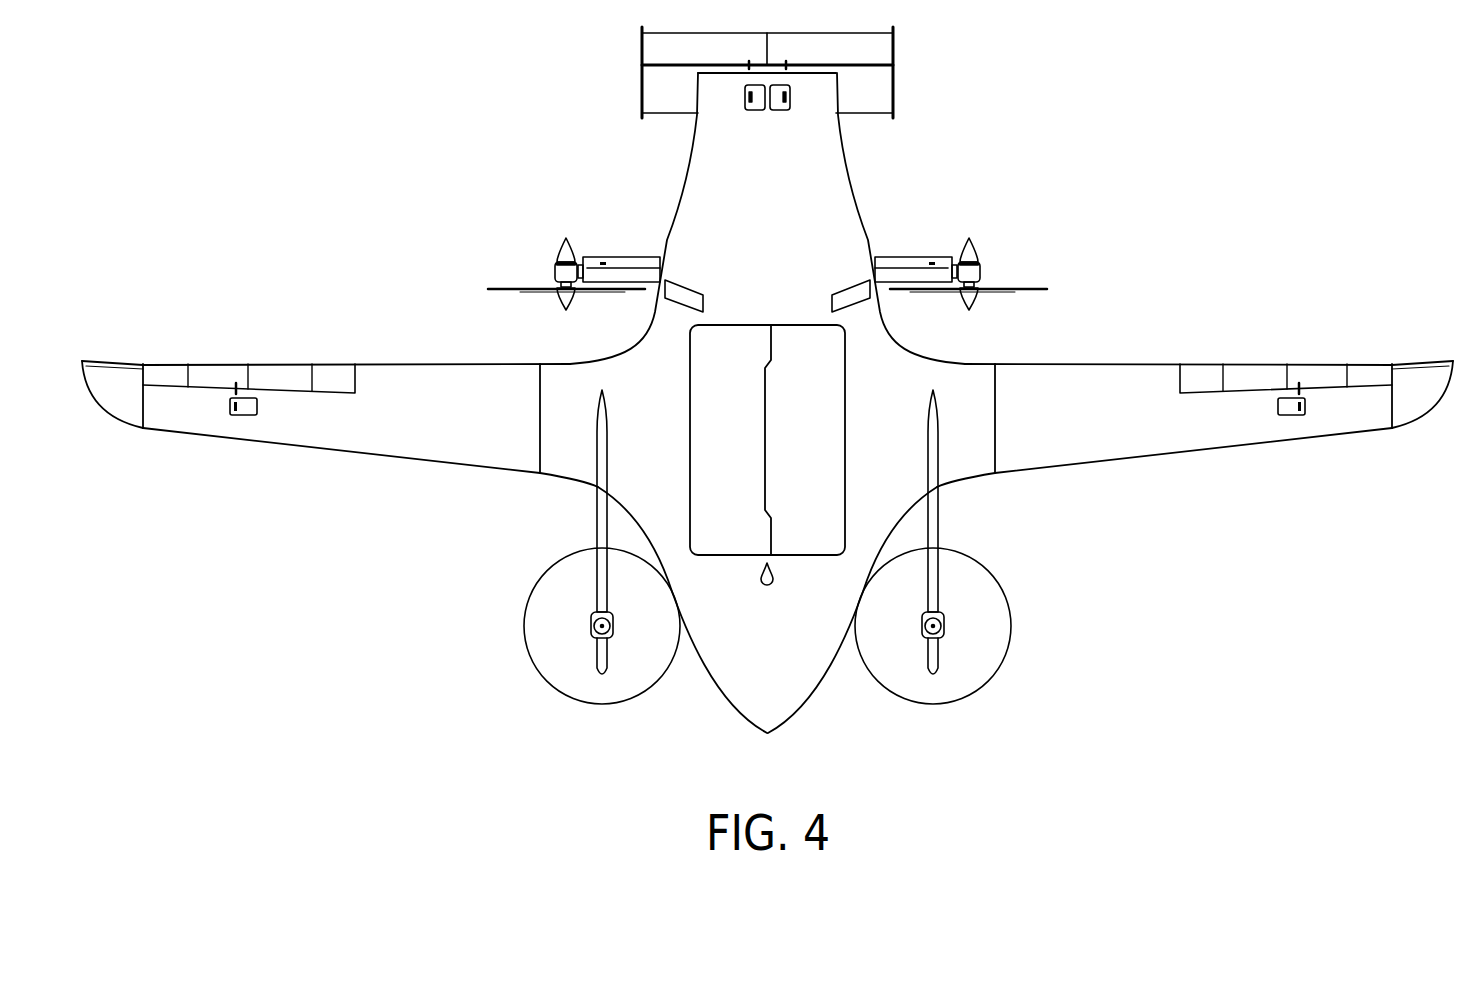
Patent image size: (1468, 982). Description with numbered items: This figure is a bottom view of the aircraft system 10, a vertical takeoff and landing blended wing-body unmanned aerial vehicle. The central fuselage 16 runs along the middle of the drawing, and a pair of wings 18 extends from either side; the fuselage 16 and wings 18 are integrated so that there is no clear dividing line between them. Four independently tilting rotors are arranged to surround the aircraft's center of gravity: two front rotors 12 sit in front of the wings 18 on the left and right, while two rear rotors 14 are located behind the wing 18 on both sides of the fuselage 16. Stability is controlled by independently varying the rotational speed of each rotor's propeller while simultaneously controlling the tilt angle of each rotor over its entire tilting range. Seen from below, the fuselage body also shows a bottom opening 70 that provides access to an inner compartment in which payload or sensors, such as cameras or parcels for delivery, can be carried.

The aircraft system 10 is at (430, 116).
The front rotors 12 is at (590, 630).
The rear rotors 14 is at (566, 250).
The fuselage 16 is at (782, 239).
The wings 18 is at (1143, 398).
The bottom opening 70 is at (800, 399).